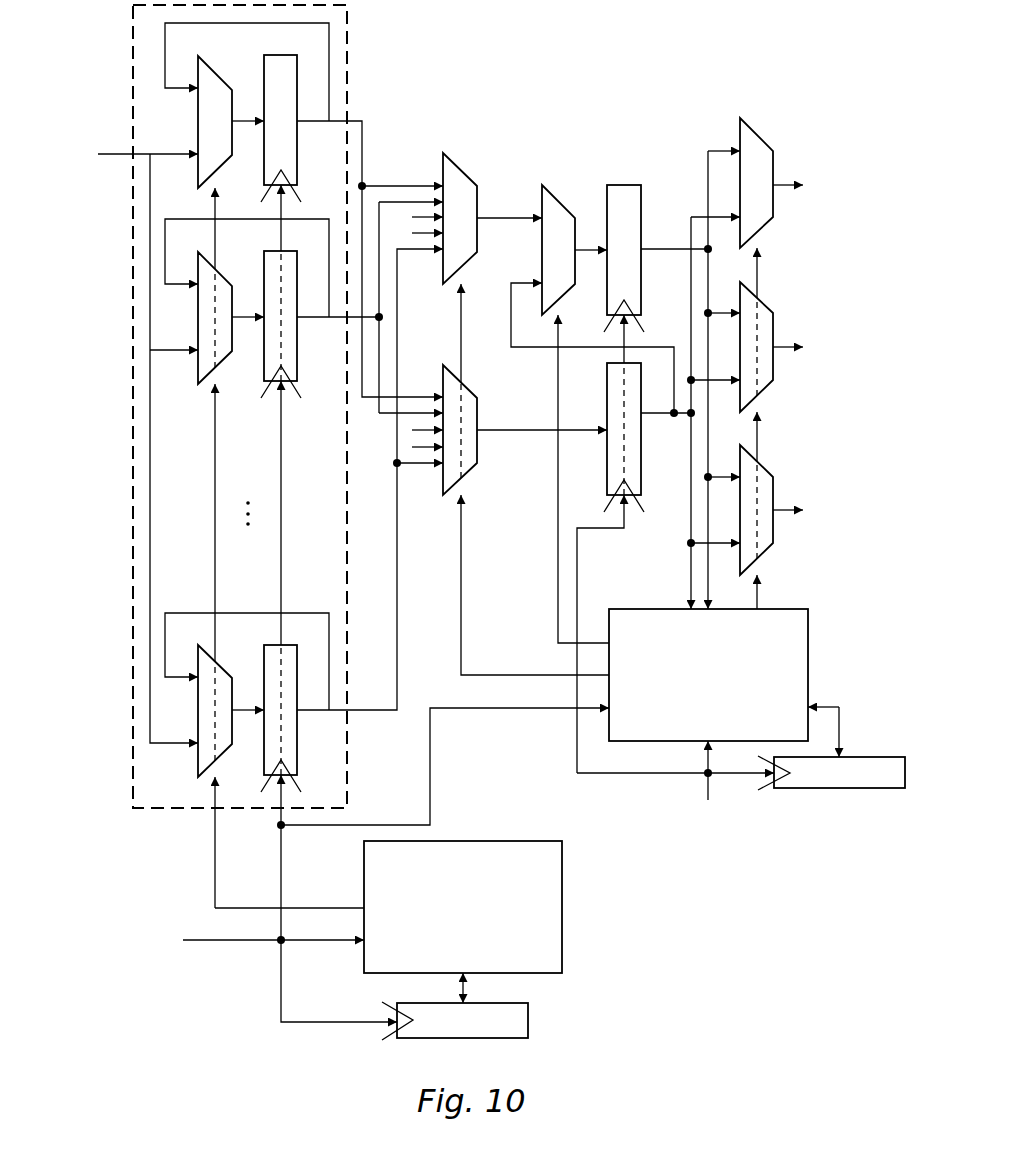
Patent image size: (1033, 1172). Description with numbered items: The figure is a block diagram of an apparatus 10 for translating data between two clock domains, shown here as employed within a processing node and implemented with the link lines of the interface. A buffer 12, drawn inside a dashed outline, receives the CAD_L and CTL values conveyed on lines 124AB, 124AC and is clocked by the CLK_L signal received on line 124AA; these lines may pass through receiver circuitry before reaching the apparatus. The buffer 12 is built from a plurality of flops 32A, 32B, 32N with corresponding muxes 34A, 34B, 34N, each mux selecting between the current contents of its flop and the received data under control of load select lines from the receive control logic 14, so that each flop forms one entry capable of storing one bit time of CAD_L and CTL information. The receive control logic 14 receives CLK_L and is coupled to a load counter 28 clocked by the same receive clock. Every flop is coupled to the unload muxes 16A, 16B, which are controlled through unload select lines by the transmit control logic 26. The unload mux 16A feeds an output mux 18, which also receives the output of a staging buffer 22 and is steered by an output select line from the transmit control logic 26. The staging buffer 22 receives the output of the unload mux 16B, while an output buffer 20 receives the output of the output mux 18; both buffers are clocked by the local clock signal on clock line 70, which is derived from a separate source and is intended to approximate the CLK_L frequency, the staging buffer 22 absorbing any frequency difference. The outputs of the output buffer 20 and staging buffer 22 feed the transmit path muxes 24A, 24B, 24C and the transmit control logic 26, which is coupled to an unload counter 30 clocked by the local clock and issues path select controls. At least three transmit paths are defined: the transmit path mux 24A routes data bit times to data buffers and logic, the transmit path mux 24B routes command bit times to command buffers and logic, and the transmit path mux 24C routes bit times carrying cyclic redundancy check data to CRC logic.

The apparatus 10 is at (653, 1013).
The buffer 12 is at (347, 40).
The receive control logic 14 is at (388, 922).
The unload mux 16A is at (461, 164).
The unload mux 16B is at (470, 470).
The output mux 18 is at (557, 197).
The output buffer 20 is at (627, 184).
The staging buffer 22 is at (641, 462).
The transmit path mux 24A is at (760, 128).
The transmit path mux 24B is at (760, 303).
The transmit path mux 24C is at (763, 465).
The transmit control logic 26 is at (560, 717).
The load counter 28 is at (463, 1038).
The unload counter 30 is at (838, 789).
The flop 32A is at (297, 137).
The flop 32B is at (264, 366).
The flop 32N is at (297, 743).
The mux 34A is at (198, 103).
The mux 34B is at (198, 366).
The mux 34N is at (198, 760).
The clock line 70 is at (592, 777).
The line 124AA is at (227, 943).
The line 124AB is at (120, 194).
The line 124AC is at (128, 155).